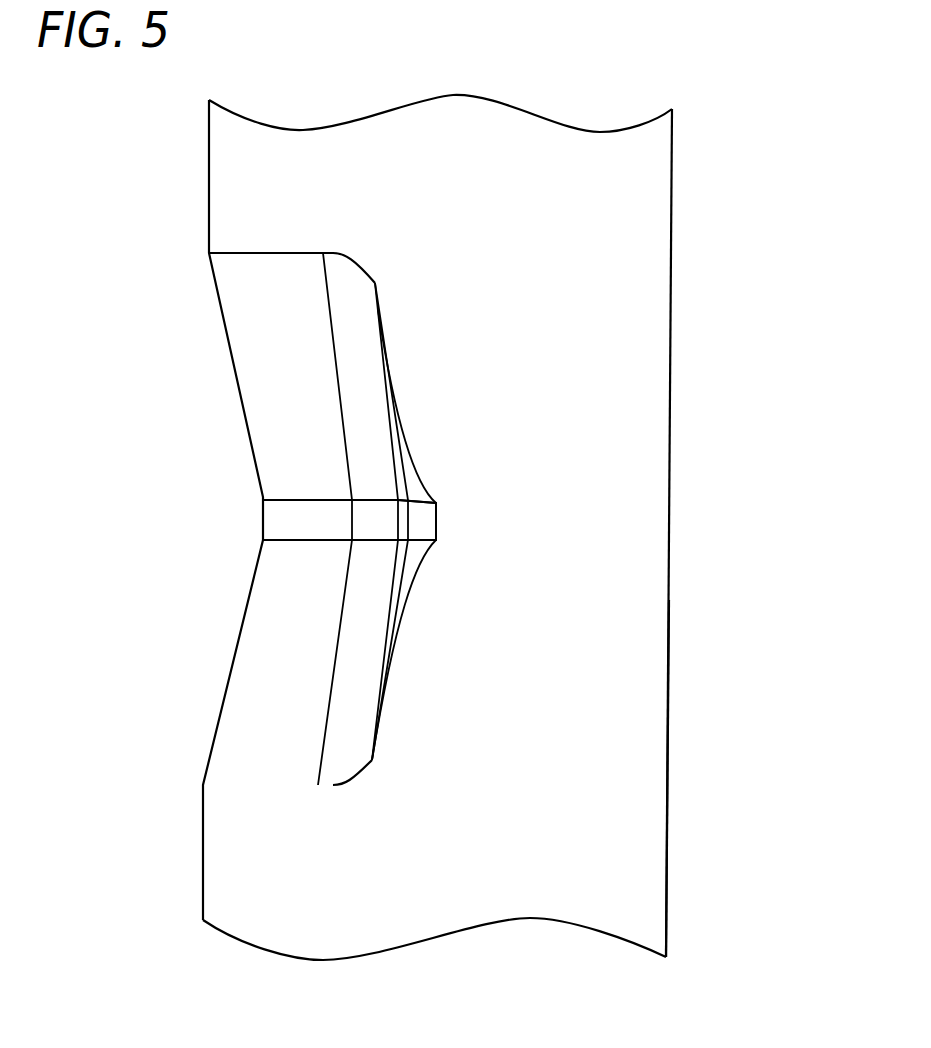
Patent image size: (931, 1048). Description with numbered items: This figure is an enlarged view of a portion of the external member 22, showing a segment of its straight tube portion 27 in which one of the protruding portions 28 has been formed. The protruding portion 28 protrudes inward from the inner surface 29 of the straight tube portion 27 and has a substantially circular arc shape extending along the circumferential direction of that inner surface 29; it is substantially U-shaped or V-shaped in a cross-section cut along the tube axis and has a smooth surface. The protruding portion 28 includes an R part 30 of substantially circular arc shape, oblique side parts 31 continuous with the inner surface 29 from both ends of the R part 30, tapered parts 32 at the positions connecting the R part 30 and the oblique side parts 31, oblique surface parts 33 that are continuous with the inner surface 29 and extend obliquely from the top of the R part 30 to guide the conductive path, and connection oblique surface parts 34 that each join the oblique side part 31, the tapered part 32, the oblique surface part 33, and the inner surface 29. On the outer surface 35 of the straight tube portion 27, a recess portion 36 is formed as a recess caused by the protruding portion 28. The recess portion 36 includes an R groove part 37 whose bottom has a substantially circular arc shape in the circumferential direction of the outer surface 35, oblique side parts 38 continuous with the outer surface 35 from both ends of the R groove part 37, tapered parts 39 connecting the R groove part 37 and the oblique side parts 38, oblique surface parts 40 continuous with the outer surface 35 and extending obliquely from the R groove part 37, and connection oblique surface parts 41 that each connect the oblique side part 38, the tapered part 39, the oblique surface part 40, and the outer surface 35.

The external member 22 is at (200, 154).
The straight tube portion 27 is at (233, 202).
The protruding portion 28 is at (278, 520).
The inner surface 29 is at (643, 848).
The R part 30 is at (312, 528).
The oblique side part 31 is at (410, 513).
The tapered part 32 is at (380, 528).
The oblique surface part 33 is at (317, 357).
The connection oblique surface part 34 is at (372, 418).
The outer surface 35 is at (650, 882).
The recess portion 36 is at (263, 518).
The R groove part 37 is at (292, 542).
The oblique side part 38 is at (410, 530).
The tapered part 39 is at (371, 537).
The oblique surface part 40 is at (315, 390).
The connection oblique surface part 41 is at (377, 452).